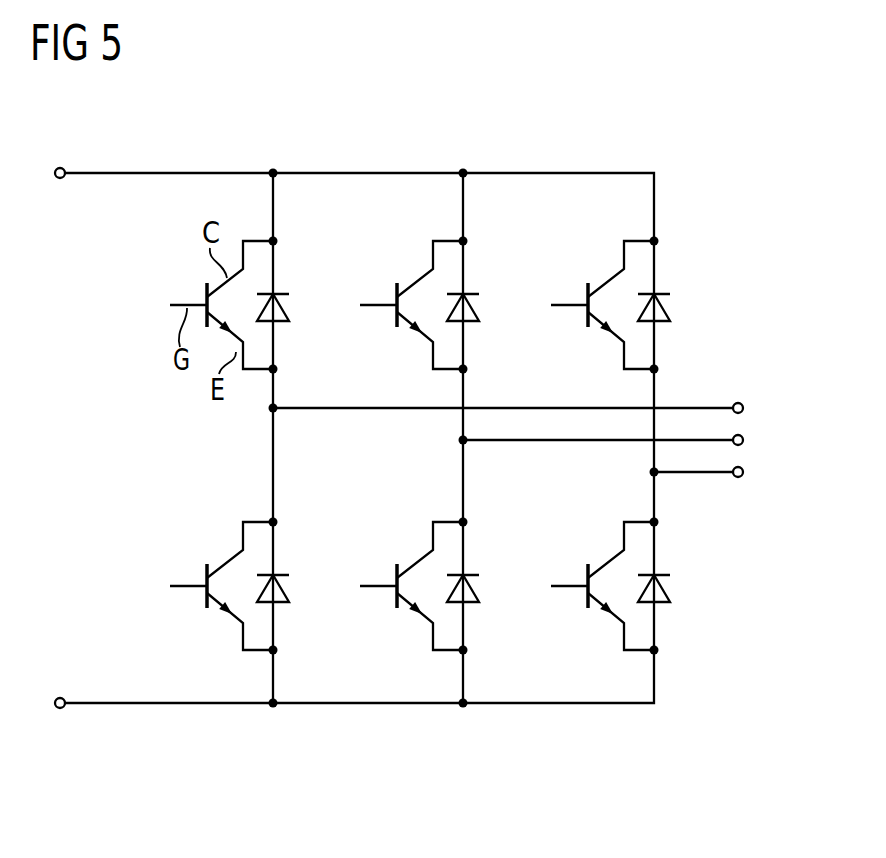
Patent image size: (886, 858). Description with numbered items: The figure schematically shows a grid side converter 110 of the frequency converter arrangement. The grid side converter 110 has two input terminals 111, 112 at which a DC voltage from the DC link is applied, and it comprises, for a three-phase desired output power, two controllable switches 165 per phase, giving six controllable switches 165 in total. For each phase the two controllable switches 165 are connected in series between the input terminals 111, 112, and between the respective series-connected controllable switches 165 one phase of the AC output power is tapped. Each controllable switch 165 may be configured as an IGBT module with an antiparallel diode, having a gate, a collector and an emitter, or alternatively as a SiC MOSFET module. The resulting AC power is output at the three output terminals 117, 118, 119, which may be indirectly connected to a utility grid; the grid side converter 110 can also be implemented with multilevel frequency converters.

The grid side converter 110 is at (315, 765).
The input terminal 111 is at (58, 167).
The input terminal 112 is at (58, 697).
The output terminal 117 is at (744, 408).
The output terminal 118 is at (744, 440).
The output terminal 119 is at (744, 472).
The controllable switch 165 is at (175, 250).